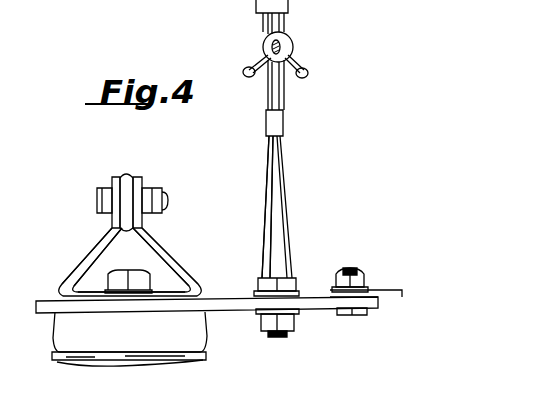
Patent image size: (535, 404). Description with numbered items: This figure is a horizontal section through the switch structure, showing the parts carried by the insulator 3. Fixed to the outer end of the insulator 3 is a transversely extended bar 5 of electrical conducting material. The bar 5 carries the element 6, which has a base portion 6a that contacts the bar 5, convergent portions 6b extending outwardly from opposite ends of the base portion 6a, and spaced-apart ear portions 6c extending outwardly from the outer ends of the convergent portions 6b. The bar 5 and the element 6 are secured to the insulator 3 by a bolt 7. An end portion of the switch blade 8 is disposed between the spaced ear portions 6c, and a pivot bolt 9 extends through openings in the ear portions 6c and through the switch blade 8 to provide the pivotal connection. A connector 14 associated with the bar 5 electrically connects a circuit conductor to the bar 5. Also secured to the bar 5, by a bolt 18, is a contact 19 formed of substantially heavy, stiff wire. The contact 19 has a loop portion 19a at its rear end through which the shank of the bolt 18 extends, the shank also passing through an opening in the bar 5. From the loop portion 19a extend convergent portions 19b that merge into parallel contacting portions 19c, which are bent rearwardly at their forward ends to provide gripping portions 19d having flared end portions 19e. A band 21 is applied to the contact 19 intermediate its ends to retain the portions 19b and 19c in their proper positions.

The insulator 3 is at (207, 335).
The bar 5 is at (222, 303).
The element 6 is at (196, 258).
The base portion 6a is at (90, 295).
The convergent portions 6b is at (80, 257).
The ear portions 6c is at (119, 174).
The bolt 7 is at (150, 277).
The switch blade 8 is at (128, 232).
The pivot bolt 9 is at (97, 198).
The connector 14 is at (355, 272).
The bolt 18 is at (292, 283).
The contact 19 is at (297, 219).
The loop portion 19a is at (294, 299).
The convergent portions 19b is at (280, 178).
The contacting portions 19c is at (278, 98).
The gripping portions 19d is at (265, 26).
The flared end portions 19e is at (257, 63).
The band 21 is at (283, 117).